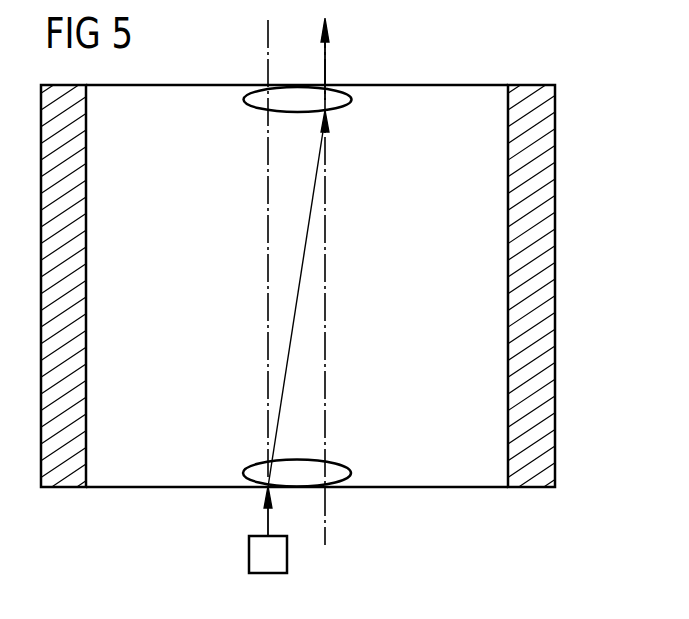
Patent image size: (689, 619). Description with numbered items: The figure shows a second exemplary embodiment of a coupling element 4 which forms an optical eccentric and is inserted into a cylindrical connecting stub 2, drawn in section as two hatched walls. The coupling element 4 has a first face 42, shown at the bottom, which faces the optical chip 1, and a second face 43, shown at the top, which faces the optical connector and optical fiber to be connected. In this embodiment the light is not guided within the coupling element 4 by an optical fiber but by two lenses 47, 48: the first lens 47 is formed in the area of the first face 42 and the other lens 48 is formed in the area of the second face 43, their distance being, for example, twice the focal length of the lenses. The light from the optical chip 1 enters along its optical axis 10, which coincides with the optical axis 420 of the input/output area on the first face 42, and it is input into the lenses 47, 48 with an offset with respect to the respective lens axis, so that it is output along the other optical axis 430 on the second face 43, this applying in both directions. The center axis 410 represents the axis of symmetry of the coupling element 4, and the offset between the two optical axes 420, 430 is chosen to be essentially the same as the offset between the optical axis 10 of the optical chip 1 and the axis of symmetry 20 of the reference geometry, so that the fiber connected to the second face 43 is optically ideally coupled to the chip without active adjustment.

The optical chip 1 is at (249, 556).
The connecting stub 2 is at (543, 264).
The coupling element 4 is at (297, 519).
The first face 42 is at (457, 489).
The second face 43 is at (428, 83).
The first lens 47 is at (332, 472).
The second lens 48 is at (261, 98).
The optical axis of the optical chip 10 is at (209, 249).
The optical axis on the first face 420 is at (267, 262).
The axis of symmetry of the reference geometry 20 is at (410, 282).
The center axis 410 is at (410, 282).
The optical axis on the second face 430 is at (325, 350).